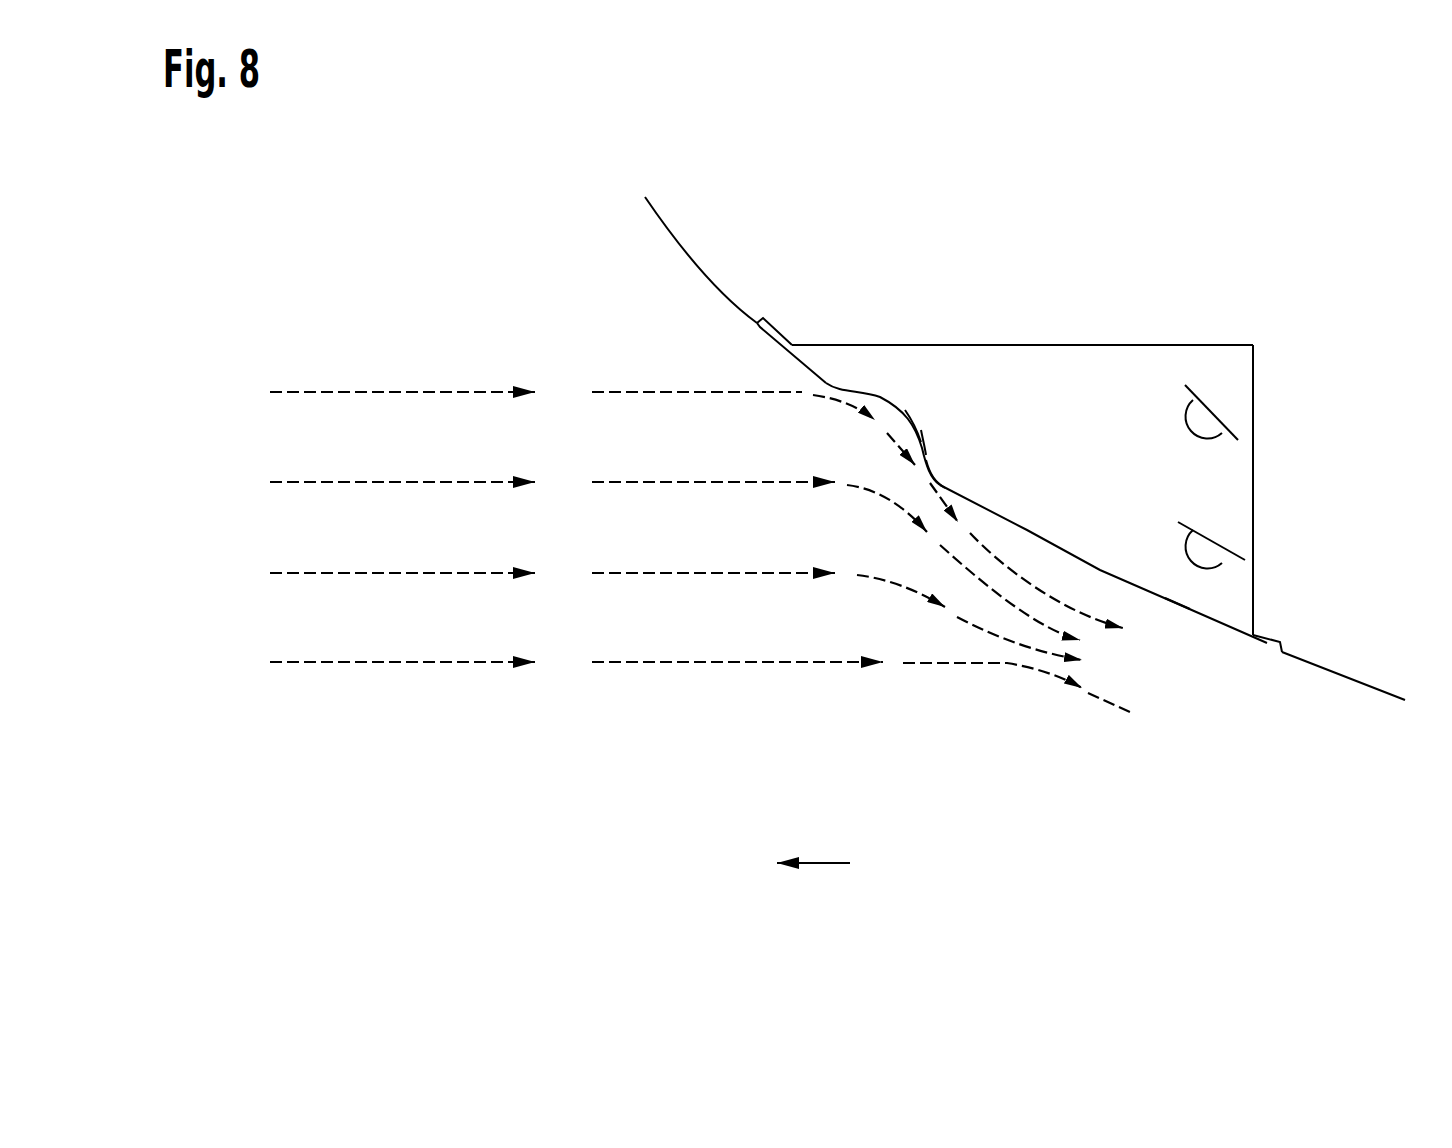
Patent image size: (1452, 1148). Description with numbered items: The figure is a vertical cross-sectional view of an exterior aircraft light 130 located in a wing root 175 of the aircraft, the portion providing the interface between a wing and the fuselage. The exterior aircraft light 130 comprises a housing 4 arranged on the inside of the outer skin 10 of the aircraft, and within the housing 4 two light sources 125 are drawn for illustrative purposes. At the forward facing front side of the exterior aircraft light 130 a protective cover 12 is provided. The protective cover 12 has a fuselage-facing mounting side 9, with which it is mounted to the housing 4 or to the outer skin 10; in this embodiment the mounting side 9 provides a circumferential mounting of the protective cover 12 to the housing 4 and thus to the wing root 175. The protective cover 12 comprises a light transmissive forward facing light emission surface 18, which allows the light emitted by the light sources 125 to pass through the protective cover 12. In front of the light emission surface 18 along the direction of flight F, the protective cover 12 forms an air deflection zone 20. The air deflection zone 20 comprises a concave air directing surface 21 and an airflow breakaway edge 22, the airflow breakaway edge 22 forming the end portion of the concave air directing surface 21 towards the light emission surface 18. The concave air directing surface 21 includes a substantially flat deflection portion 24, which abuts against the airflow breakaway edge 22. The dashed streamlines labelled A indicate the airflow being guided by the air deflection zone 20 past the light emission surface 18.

The wing root 175 is at (640, 257).
The outer skin 10 is at (715, 277).
The fuselage-facing mounting side 9 is at (785, 325).
The housing 4 is at (1092, 345).
The exterior aircraft light 130 is at (1278, 485).
The air deflection zone 20 is at (907, 372).
The concave air directing surface 21 is at (923, 404).
The substantially flat deflection portion 24 is at (923, 438).
The airflow breakaway edge 22 is at (942, 459).
The protective cover 12 is at (1057, 545).
The light transmissive forward facing light emission surface 18 is at (1173, 612).
The light source 125 is at (1217, 407).
The air flow A is at (353, 366).
The direction of flight F is at (822, 865).